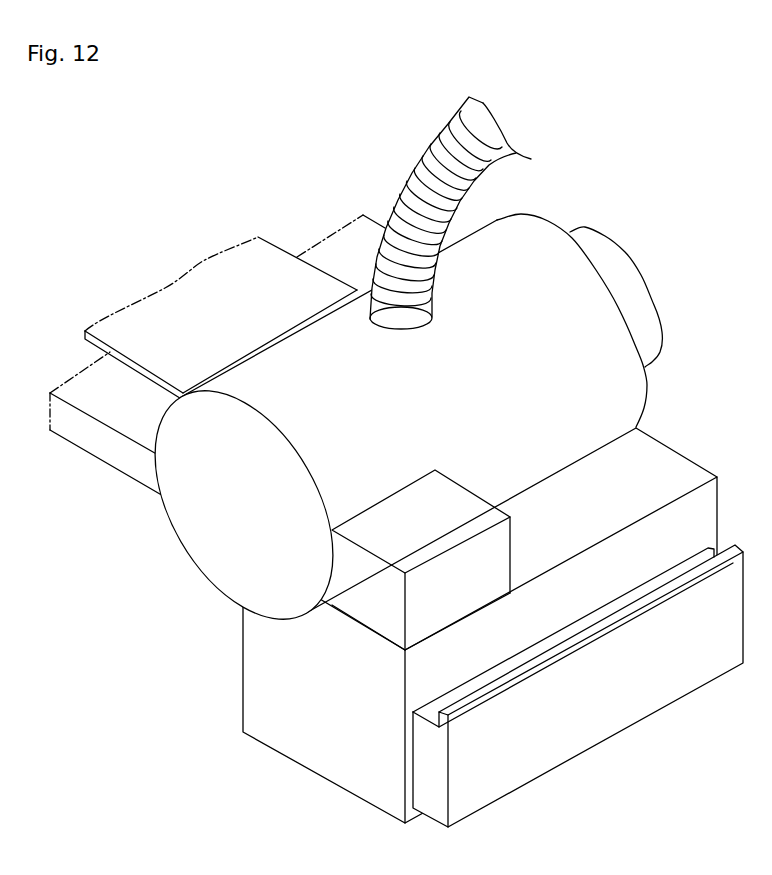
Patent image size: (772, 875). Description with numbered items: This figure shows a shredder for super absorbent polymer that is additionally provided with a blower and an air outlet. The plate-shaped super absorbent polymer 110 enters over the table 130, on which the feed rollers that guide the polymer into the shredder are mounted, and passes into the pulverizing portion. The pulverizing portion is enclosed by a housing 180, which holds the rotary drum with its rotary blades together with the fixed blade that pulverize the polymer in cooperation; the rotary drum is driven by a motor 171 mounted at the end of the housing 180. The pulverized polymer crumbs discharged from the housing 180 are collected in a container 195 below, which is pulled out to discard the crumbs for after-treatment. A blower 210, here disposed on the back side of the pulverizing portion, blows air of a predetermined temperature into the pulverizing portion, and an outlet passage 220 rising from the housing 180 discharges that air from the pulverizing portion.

The plate-shaped super absorbent polymer 110 is at (233, 257).
The table 130 is at (120, 457).
The motor 171 is at (640, 292).
The housing 180 is at (542, 224).
The container 195 is at (615, 708).
The blower 210 is at (452, 503).
The outlet passage 220 is at (415, 172).